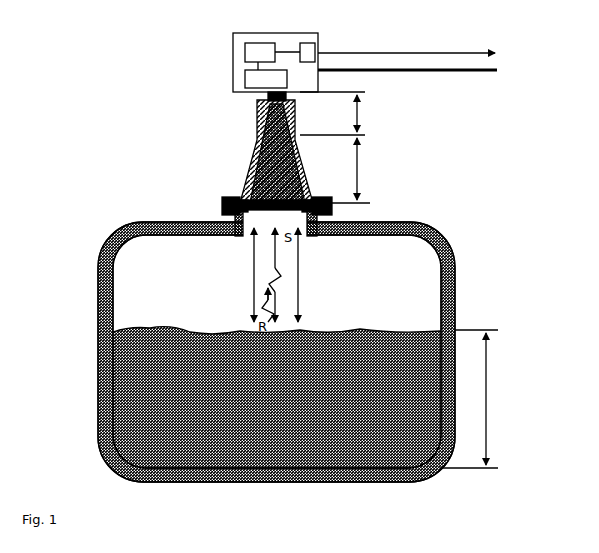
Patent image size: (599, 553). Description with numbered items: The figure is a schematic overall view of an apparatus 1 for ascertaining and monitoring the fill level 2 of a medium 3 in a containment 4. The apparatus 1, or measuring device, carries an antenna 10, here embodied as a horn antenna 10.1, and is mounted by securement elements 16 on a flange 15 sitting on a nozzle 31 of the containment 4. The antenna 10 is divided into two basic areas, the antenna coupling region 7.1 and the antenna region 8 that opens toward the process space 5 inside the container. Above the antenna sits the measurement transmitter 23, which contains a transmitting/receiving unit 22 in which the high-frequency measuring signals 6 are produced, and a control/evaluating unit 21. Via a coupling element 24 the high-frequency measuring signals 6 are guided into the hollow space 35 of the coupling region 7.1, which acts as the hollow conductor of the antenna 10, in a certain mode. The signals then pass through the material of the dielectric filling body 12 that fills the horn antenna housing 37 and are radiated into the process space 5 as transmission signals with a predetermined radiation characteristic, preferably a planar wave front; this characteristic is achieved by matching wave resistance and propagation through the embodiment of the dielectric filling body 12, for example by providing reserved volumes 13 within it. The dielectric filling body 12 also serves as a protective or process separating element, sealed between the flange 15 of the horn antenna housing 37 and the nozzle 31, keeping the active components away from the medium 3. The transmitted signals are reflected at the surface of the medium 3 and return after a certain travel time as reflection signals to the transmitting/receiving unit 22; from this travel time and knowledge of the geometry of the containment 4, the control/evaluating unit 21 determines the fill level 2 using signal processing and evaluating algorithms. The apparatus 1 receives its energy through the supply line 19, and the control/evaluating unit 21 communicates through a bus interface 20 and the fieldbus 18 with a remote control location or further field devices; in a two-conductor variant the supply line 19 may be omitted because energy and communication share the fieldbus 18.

The apparatus 1 is at (108, 70).
The fill level 2 is at (474, 399).
The medium 3 is at (167, 323).
The containment 4 is at (447, 242).
The process space 5 is at (407, 272).
The high-frequency measuring signals 6 is at (313, 298).
The antenna coupling region 7.1 is at (359, 120).
The antenna region 8 is at (359, 172).
The antenna 10 is at (278, 121).
The horn antenna 10.1 is at (278, 121).
The dielectric filling body 12 is at (237, 155).
The reserved volumes 13 is at (245, 182).
The flange 15 is at (240, 210).
The securement elements 16 is at (226, 199).
The fieldbus 18 is at (437, 52).
The supply line 19 is at (445, 72).
The bus interface 20 is at (325, 52).
The control/evaluating unit 21 is at (233, 50).
The transmitting/receiving unit 22 is at (252, 88).
The measurement transmitter 23 is at (275, 62).
The coupling element 24 is at (233, 88).
The nozzle 31 is at (333, 218).
The hollow space 35 is at (265, 97).
The horn antenna housing 37 is at (258, 148).